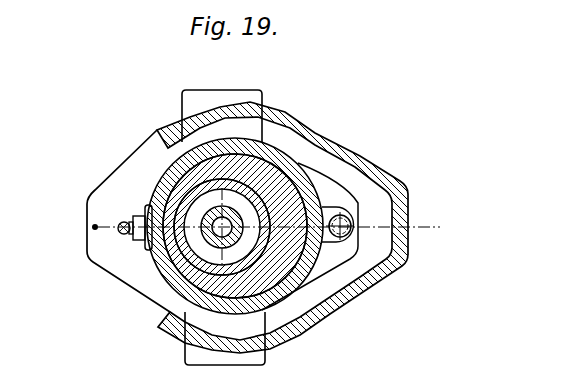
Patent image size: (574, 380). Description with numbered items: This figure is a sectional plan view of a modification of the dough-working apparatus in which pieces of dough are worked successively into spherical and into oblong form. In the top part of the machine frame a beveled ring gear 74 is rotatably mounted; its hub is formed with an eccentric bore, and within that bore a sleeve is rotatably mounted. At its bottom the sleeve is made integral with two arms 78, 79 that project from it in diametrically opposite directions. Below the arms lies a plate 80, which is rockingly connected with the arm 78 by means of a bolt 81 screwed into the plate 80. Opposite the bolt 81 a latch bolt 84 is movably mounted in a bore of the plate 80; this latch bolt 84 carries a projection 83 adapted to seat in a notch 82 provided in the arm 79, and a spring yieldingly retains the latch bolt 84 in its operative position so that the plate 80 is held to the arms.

The beveled ring gear 74 is at (280, 160).
The arm 78 is at (328, 212).
The arm 79 is at (142, 243).
The plate 80 is at (340, 251).
The bolt 81 is at (357, 213).
The notch 82 is at (147, 222).
The projection 83 is at (129, 227).
The latch bolt 84 is at (120, 232).